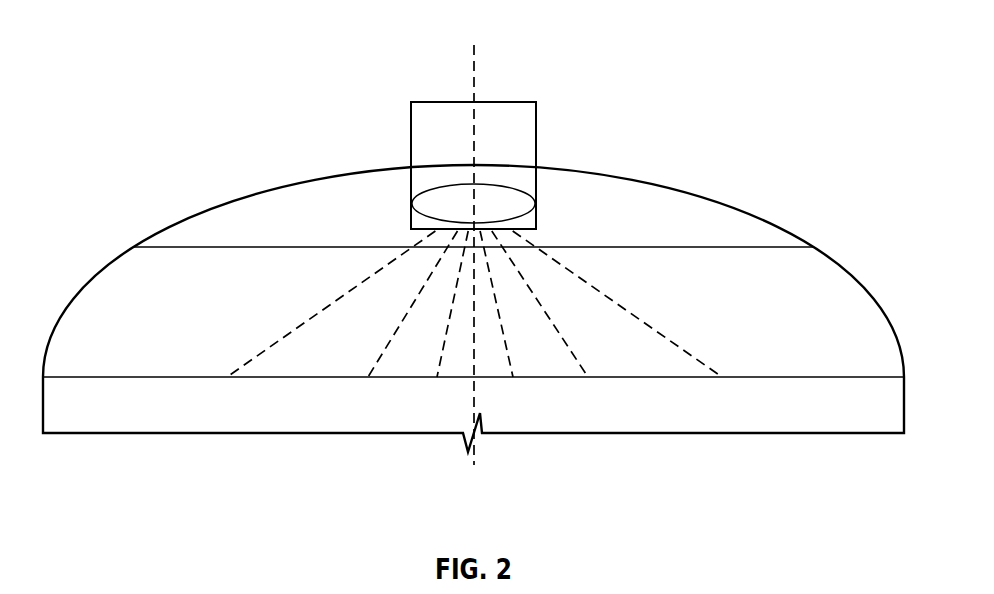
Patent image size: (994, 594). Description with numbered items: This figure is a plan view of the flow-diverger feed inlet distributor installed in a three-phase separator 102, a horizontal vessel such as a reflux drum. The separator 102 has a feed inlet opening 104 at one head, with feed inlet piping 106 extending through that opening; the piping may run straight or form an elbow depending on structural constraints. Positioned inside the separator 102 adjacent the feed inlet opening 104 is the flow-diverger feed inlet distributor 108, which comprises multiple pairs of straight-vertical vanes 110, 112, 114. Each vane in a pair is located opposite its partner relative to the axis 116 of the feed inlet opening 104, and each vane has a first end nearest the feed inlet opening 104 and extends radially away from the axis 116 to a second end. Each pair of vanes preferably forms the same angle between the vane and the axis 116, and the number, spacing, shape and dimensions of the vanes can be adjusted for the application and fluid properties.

The 3-phase separator 102 is at (683, 193).
The feed inlet opening 104 is at (537, 200).
The feed inlet piping 106 is at (537, 137).
The flow-diverger feed inlet distributor 108 is at (447, 304).
The straight-vertical vanes 110 is at (280, 338).
The straight-vertical vanes 112 is at (395, 333).
The straight-vertical vanes 114 is at (453, 315).
The axis 116 is at (475, 68).